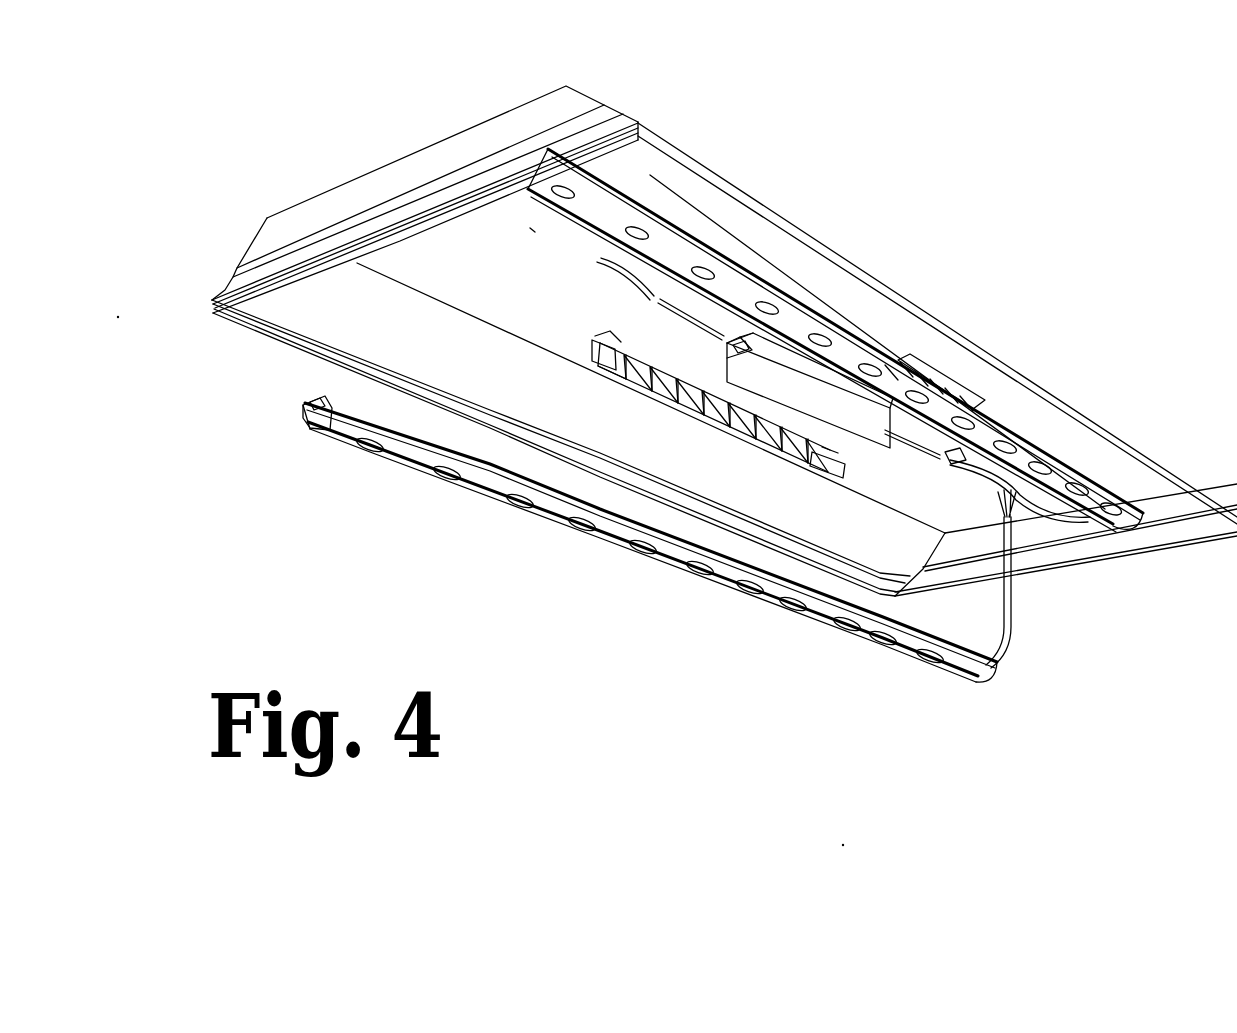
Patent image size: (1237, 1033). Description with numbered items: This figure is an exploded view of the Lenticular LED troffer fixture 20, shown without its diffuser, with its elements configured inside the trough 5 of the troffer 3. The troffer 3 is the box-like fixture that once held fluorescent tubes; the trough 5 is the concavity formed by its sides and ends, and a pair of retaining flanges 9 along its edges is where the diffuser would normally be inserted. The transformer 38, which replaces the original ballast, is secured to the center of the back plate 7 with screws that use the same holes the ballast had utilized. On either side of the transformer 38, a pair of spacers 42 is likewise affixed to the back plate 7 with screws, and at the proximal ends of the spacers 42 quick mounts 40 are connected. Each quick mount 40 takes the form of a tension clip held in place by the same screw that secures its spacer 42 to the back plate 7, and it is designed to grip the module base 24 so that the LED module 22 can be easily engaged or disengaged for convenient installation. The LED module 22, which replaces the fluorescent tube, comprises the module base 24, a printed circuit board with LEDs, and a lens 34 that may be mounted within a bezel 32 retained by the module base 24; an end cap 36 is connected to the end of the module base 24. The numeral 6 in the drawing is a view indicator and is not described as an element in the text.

The Lenticular LED troffer fixture 20 is at (366, 140).
The troffer 3 is at (557, 112).
The trough 5 is at (530, 230).
The back plate 7 is at (552, 303).
The retaining flanges 9 is at (773, 237).
The LED module 22 is at (1065, 450).
The module base 24 is at (988, 655).
The bezel 32 is at (407, 457).
The lens 34 is at (700, 567).
The end cap 36 is at (303, 415).
The transformer 38 is at (860, 433).
The quick mount 40 is at (823, 300).
The spacer 42 is at (913, 353).
The section indicator 6 is at (893, 662).